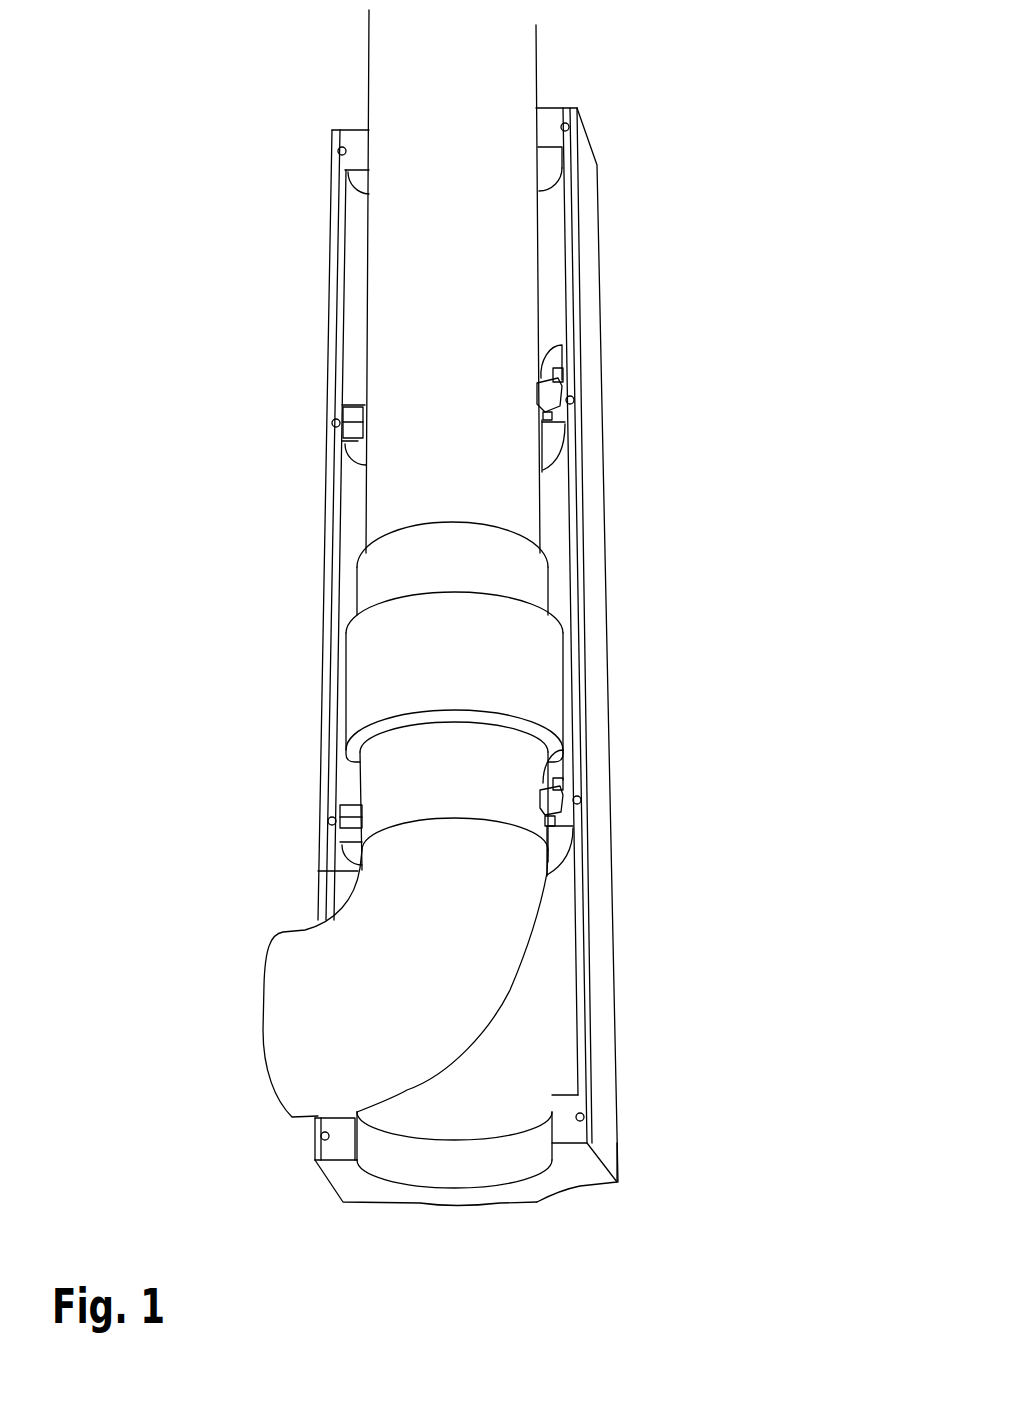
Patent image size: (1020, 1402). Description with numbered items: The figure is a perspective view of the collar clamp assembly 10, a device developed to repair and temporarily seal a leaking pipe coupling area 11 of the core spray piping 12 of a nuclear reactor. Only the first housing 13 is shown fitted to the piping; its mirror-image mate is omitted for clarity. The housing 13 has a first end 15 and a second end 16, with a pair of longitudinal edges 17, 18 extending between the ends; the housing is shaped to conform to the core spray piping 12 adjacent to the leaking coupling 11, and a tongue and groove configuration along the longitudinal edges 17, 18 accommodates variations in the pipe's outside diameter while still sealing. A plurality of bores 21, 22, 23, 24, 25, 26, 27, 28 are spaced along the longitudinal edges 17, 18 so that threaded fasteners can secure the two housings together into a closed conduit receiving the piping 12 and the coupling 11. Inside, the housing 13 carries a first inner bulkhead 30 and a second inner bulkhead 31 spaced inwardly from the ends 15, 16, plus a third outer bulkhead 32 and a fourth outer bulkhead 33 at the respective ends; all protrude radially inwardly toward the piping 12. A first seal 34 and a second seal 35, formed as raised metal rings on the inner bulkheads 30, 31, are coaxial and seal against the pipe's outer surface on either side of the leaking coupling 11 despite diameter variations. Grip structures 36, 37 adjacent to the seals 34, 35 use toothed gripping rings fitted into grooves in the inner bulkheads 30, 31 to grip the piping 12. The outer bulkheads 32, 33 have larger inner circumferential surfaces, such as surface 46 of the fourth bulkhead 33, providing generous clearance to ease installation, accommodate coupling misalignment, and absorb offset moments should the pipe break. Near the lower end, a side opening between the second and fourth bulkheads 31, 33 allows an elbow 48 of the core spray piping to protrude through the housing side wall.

The collar clamp assembly 10 is at (200, 741).
The leaking pipe coupling area 11 is at (360, 683).
The core spray piping 12 is at (385, 493).
The first housing 13 is at (330, 300).
The first end 15 is at (583, 129).
The second end 16 is at (593, 1170).
The longitudinal edge 17 is at (332, 215).
The longitudinal edge 18 is at (573, 238).
The bore 21 is at (338, 149).
The bore 22 is at (560, 108).
The bore 23 is at (333, 420).
The bore 24 is at (574, 400).
The bore 25 is at (328, 821).
The bore 26 is at (581, 800).
The bore 27 is at (320, 1136).
The bore 28 is at (585, 1117).
The first inner bulkhead 30 is at (561, 392).
The second inner bulkhead 31 is at (566, 780).
The third outer bulkhead 32 is at (352, 178).
The fourth outer bulkhead 33 is at (343, 1181).
The first seal 34 is at (548, 378).
The second seal 35 is at (553, 827).
The grip structure 36 is at (548, 410).
The grip structure 37 is at (343, 805).
The inner circumferential surface 46 is at (507, 1168).
The elbow 48 is at (292, 1062).